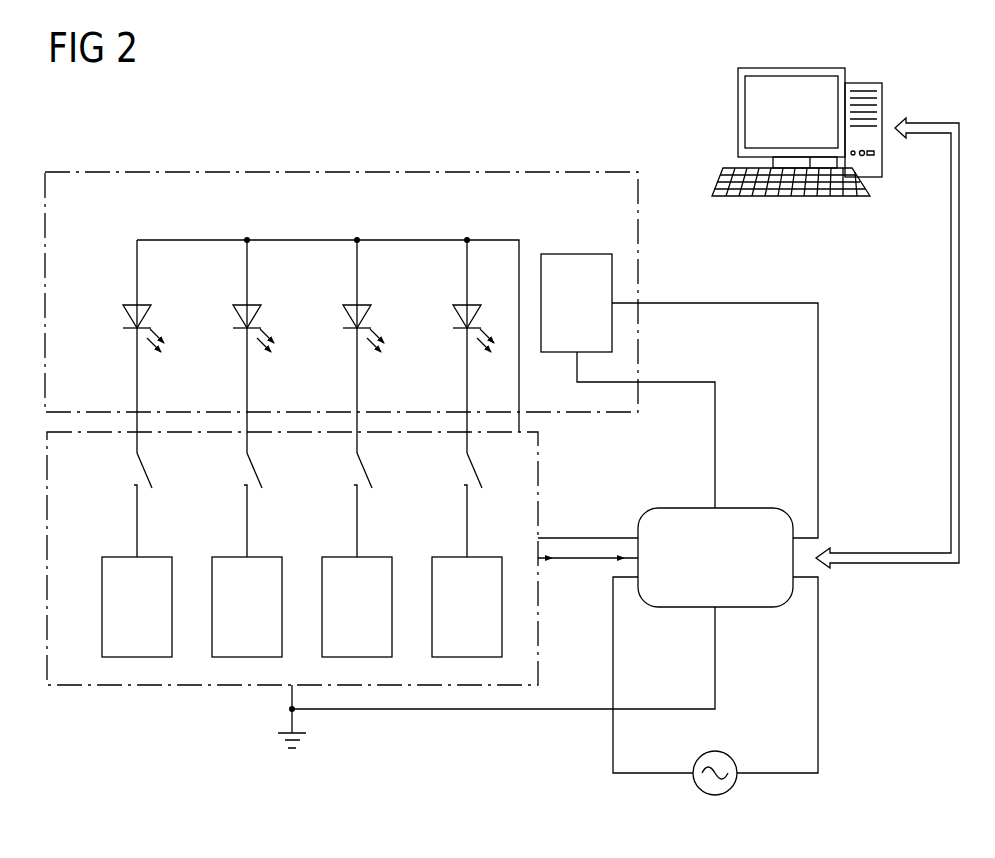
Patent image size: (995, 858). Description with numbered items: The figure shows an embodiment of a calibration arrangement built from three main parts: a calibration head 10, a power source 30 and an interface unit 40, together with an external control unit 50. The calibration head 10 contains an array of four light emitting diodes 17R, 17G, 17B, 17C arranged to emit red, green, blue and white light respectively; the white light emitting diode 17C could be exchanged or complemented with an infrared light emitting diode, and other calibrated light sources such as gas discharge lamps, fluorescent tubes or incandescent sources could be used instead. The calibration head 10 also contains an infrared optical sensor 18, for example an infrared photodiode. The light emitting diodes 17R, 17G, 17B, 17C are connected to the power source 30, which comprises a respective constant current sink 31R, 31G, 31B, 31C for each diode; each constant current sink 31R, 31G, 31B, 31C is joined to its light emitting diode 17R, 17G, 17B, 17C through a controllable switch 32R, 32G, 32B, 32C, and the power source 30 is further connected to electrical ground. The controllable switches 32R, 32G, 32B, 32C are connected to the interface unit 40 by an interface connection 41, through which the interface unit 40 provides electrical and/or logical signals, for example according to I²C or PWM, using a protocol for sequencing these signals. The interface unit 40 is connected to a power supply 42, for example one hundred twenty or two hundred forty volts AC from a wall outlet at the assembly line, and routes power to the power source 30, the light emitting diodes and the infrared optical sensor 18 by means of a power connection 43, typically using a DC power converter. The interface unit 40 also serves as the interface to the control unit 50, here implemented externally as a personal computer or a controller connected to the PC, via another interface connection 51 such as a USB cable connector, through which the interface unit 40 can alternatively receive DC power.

The calibration head 10 is at (340, 172).
The light emitting diode 17R is at (123, 318).
The light emitting diode 17G is at (233, 318).
The light emitting diode 17B is at (343, 318).
The light emitting diode 17C is at (453, 318).
The infrared optical sensor 18 is at (576, 254).
The power source 30 is at (152, 688).
The constant current sink 31R is at (152, 557).
The constant current sink 31G is at (262, 557).
The constant current sink 31B is at (372, 557).
The constant current sink 31C is at (482, 557).
The controllable switch 32R is at (143, 466).
The controllable switch 32G is at (253, 466).
The controllable switch 32B is at (363, 466).
The controllable switch 32C is at (473, 466).
The interface unit 40 is at (745, 508).
The interface connection 41 is at (585, 560).
The power supply 42 is at (731, 757).
The power connection 43 is at (588, 538).
The control unit 50 is at (738, 112).
The interface connection 51 is at (951, 331).